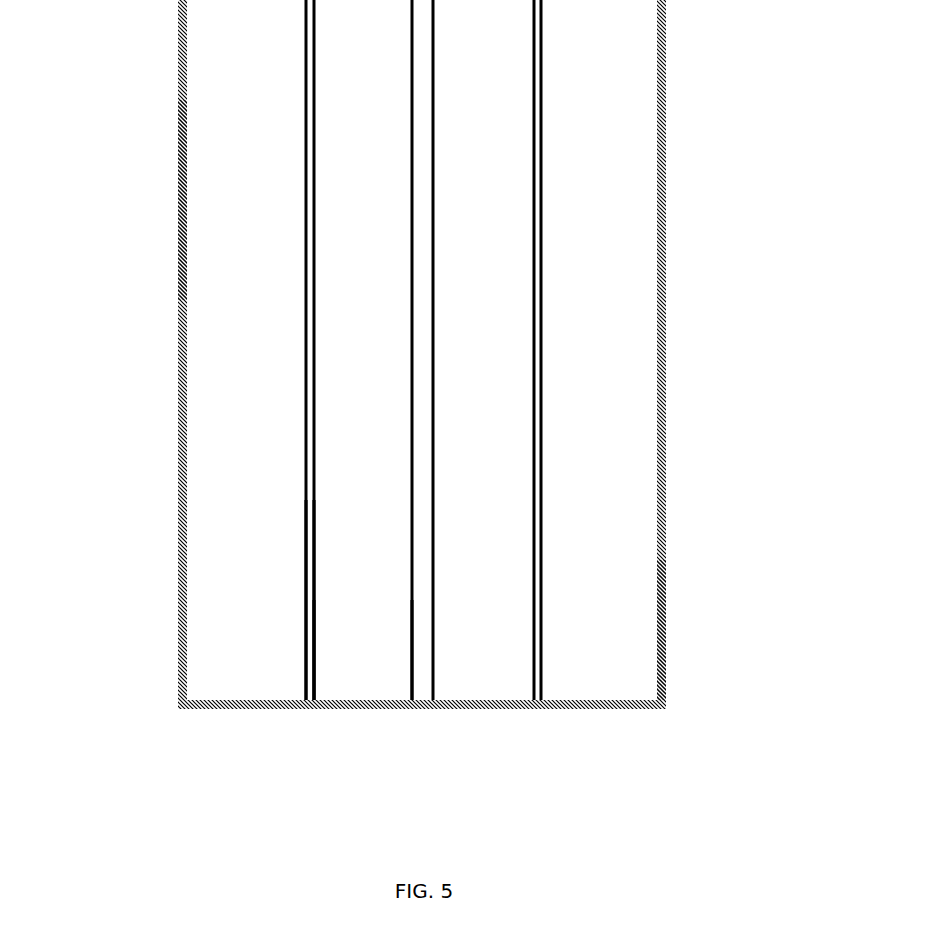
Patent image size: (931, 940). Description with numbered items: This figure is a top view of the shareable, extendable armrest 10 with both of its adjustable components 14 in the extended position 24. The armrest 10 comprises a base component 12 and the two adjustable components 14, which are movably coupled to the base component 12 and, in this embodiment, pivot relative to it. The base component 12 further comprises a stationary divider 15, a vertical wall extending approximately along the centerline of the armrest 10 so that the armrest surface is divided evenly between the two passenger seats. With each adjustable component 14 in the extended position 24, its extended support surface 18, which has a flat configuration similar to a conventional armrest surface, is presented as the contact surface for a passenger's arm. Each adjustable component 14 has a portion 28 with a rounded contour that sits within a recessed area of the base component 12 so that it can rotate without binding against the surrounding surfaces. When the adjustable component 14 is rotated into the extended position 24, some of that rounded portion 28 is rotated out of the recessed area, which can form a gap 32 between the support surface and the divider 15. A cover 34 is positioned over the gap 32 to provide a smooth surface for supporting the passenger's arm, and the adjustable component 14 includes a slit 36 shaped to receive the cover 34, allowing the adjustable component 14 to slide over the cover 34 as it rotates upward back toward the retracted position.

The armrest 10 is at (435, 422).
The base component 12 is at (470, 705).
The adjustable component 14 is at (622, 505).
The stationary divider 15 is at (422, 243).
The extended support surface 18 is at (622, 659).
The extended position 24 is at (140, 205).
The portion of the adjustable component 28 is at (343, 648).
The gap 32 is at (373, 410).
The cover 34 is at (363, 638).
The slit 36 is at (540, 369).